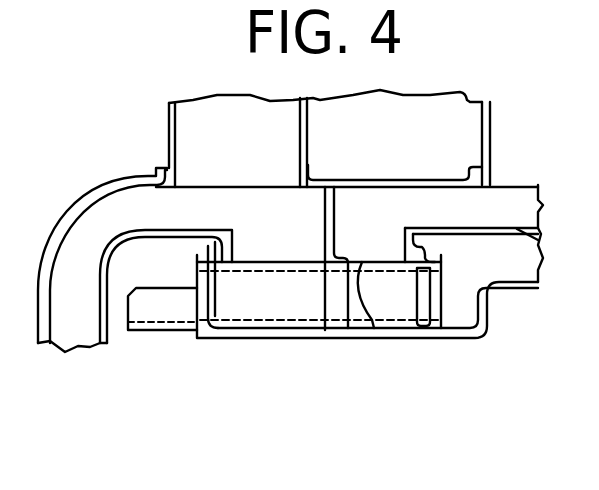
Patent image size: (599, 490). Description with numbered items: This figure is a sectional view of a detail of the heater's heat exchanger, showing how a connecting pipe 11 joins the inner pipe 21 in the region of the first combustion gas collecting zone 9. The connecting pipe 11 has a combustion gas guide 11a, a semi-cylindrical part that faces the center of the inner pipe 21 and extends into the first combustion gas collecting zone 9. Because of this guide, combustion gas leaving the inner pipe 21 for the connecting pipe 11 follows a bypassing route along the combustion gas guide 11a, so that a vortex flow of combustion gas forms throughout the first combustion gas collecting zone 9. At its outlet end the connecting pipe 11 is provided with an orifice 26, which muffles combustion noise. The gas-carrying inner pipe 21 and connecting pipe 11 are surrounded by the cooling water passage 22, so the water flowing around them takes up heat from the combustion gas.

The cooling water passage 22 is at (72, 327).
The first combustion gas collecting zone 9 is at (150, 262).
The combustion gas guide 11a is at (165, 308).
The connecting pipe 11 is at (275, 300).
The inner pipe 21 is at (364, 333).
The orifice 26 is at (423, 302).